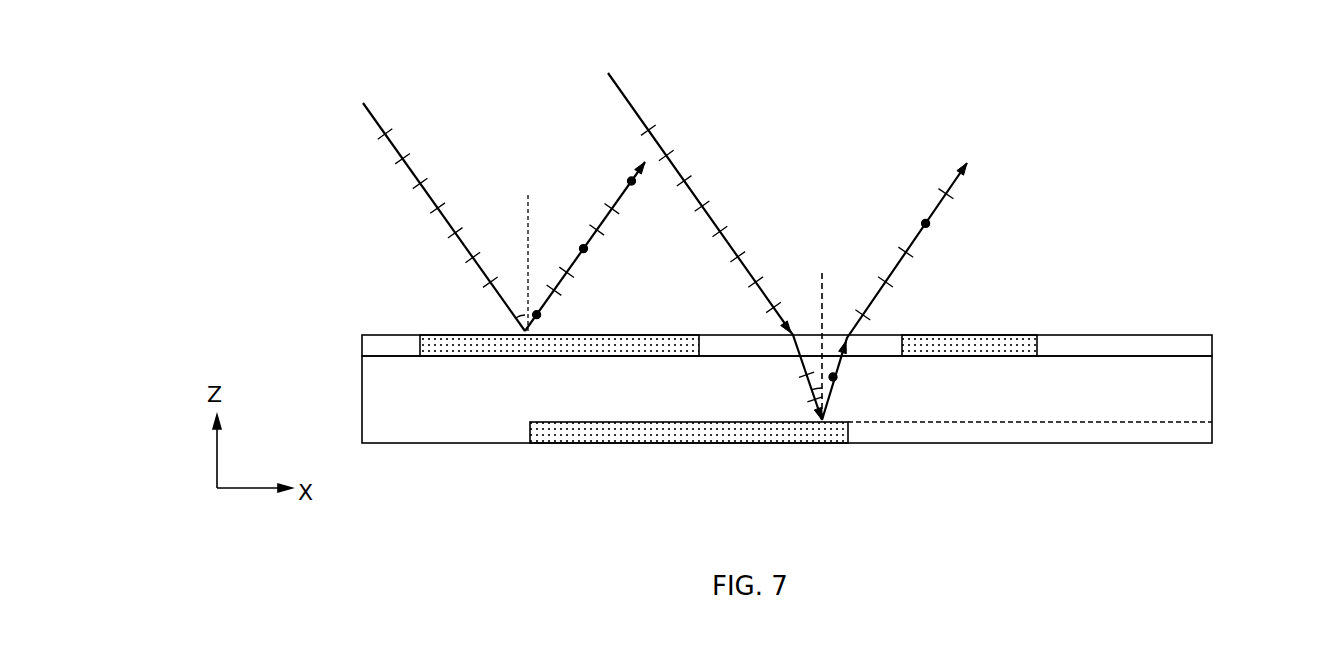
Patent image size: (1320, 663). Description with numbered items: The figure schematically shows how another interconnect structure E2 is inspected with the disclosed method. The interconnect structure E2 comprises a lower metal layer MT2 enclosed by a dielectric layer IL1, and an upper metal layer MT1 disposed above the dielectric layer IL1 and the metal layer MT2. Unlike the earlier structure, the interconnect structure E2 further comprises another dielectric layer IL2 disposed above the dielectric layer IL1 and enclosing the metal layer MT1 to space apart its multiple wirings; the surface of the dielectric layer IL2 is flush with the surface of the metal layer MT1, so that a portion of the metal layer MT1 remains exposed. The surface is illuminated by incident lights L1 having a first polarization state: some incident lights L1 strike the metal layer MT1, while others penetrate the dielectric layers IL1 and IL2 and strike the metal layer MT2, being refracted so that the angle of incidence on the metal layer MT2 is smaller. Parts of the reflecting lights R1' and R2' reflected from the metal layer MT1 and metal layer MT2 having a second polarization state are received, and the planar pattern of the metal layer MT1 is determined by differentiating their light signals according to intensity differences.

The incident lights L1 is at (593, 246).
The reflecting lights R1' is at (585, 246).
The reflecting lights R2' is at (894, 291).
The interconnect structure E2 is at (386, 318).
The dielectric layer IL1 is at (375, 414).
The dielectric layer IL2 is at (372, 346).
The metal layer MT1 is at (653, 342).
The metal layer MT2 is at (1212, 422).